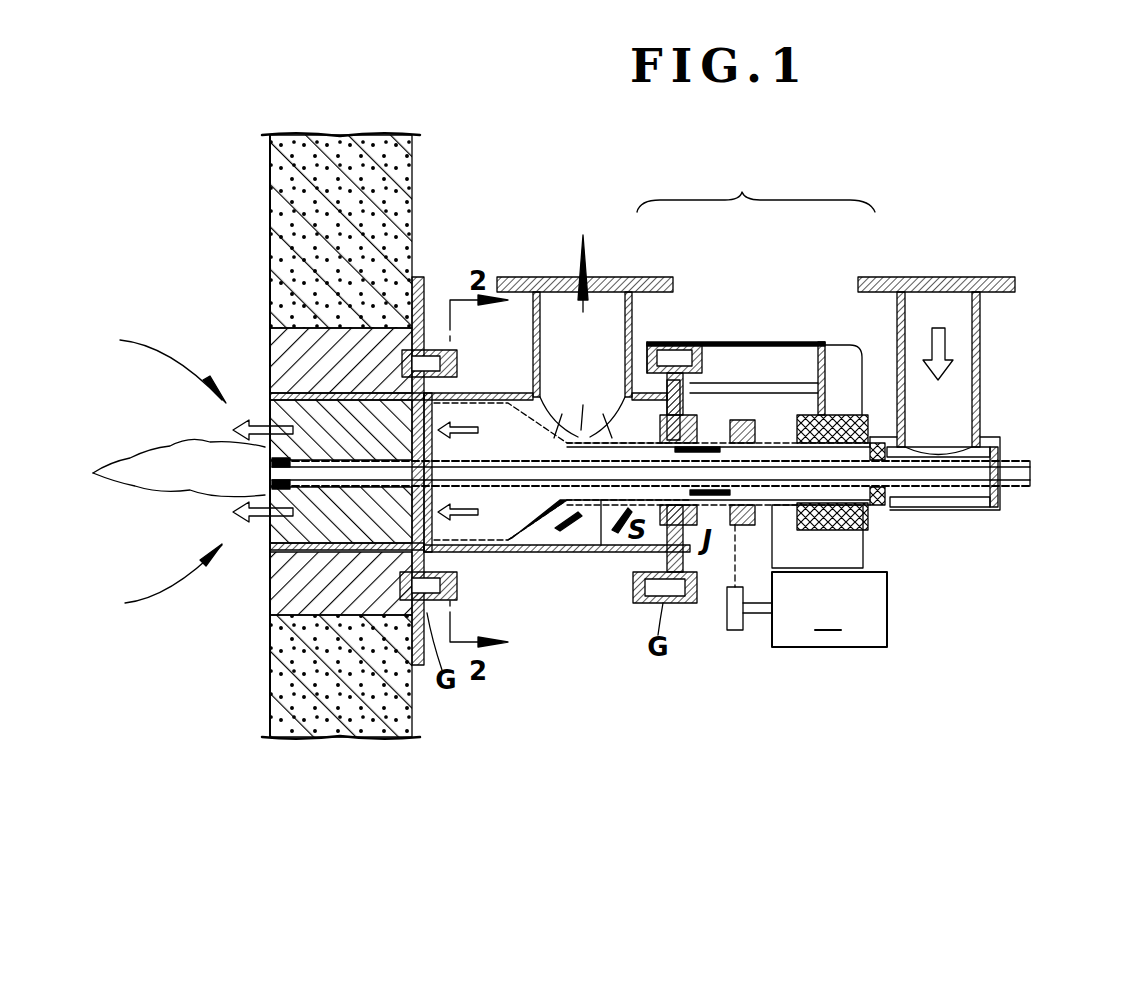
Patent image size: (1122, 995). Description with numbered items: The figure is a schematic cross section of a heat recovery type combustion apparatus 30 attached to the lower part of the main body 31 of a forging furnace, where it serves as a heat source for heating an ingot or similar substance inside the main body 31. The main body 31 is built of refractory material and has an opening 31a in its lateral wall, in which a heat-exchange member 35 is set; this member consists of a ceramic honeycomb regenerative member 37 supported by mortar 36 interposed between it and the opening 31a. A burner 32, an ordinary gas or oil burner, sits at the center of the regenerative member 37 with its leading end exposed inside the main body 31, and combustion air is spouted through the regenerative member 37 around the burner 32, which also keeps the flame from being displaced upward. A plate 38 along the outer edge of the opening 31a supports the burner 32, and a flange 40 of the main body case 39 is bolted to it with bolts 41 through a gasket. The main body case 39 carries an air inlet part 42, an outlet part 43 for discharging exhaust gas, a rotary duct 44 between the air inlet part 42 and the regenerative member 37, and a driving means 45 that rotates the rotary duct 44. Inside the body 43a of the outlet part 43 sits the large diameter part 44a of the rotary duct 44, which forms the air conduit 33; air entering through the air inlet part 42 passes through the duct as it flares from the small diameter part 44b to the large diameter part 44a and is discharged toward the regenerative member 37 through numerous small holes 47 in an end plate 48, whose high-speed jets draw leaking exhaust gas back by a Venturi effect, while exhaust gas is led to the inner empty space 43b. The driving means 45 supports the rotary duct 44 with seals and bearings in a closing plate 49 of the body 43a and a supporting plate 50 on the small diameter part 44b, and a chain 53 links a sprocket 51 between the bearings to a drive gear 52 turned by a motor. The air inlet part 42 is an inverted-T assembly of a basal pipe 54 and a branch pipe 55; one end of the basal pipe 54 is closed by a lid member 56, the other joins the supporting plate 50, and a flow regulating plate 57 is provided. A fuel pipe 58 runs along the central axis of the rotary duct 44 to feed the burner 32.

The heat recovery type combustion apparatus 30 is at (360, 70).
The main body of combustion apparatus 31 is at (422, 166).
The opening 31a is at (280, 400).
The burner 32 is at (255, 465).
The air conduit 33 is at (648, 433).
The heat-exchange member 35 is at (262, 526).
The mortar 36 is at (323, 400).
The regenerative member 37 is at (320, 555).
The plate 38 is at (420, 280).
The main body case 39 is at (756, 190).
The flange 40 is at (440, 398).
The bolts 41 is at (460, 362).
The air inlet part 42 is at (884, 270).
The outlet part 43 is at (643, 272).
The body of outlet part 43a is at (503, 390).
The inner empty space 43b is at (622, 557).
The rotary duct 44 is at (713, 420).
The large diameter part 44a is at (510, 553).
The small diameter part 44b is at (545, 552).
The driving means 45 is at (756, 412).
The small holes 47 is at (341, 360).
The end plate 48 is at (341, 583).
The closing plate 49 is at (673, 343).
The supporting plate 50 is at (852, 415).
The sprocket 51 is at (796, 546).
The drive gear 52 is at (735, 632).
The chain 53 is at (735, 562).
The basal pipe 54 is at (980, 513).
The branch pipe 55 is at (992, 358).
The lid member 56 is at (1000, 440).
The flow regulating plate 57 is at (895, 512).
The fuel pipe 58 is at (1035, 468).